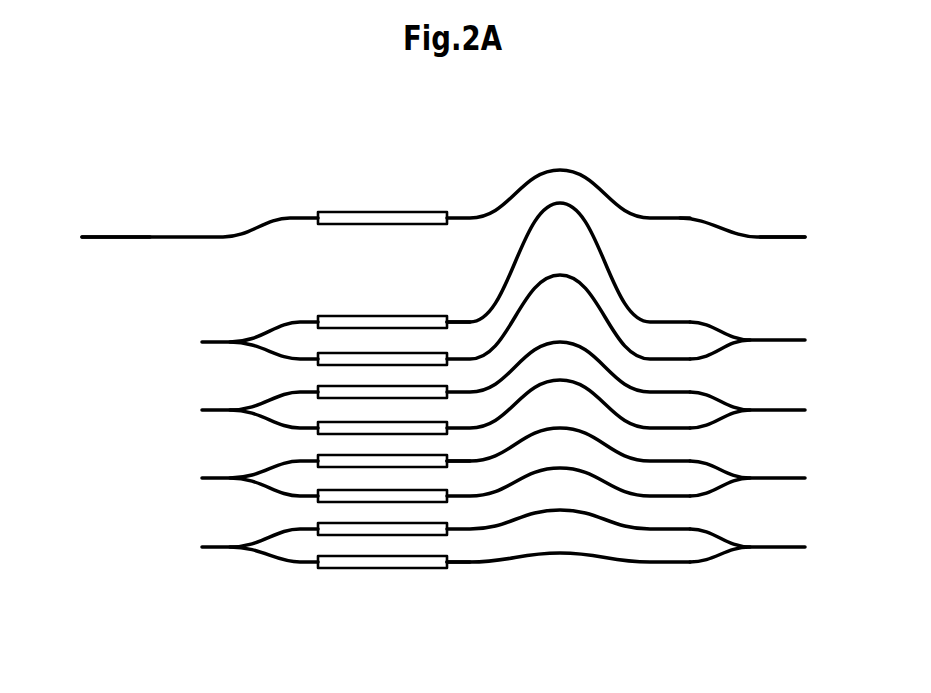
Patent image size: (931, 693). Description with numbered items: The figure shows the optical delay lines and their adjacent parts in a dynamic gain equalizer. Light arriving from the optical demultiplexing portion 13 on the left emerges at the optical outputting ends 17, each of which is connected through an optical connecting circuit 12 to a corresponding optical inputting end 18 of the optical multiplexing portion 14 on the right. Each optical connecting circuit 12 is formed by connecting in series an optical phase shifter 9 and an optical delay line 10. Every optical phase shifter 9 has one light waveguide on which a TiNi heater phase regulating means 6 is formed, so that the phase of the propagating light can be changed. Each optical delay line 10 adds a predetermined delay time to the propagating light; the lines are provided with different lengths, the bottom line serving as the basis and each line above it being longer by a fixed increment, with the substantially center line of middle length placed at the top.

The TiNi heater phase regulating means 6 is at (396, 211).
The optical phase shifter 9 is at (427, 308).
The optical delay line 10 is at (567, 155).
The optical connecting circuit 12 is at (693, 615).
The optical demultiplexing portion 13 is at (187, 314).
The optical multiplexing portion 14 is at (793, 316).
The optical outputting end 17 is at (283, 217).
The optical inputting end 18 is at (683, 217).